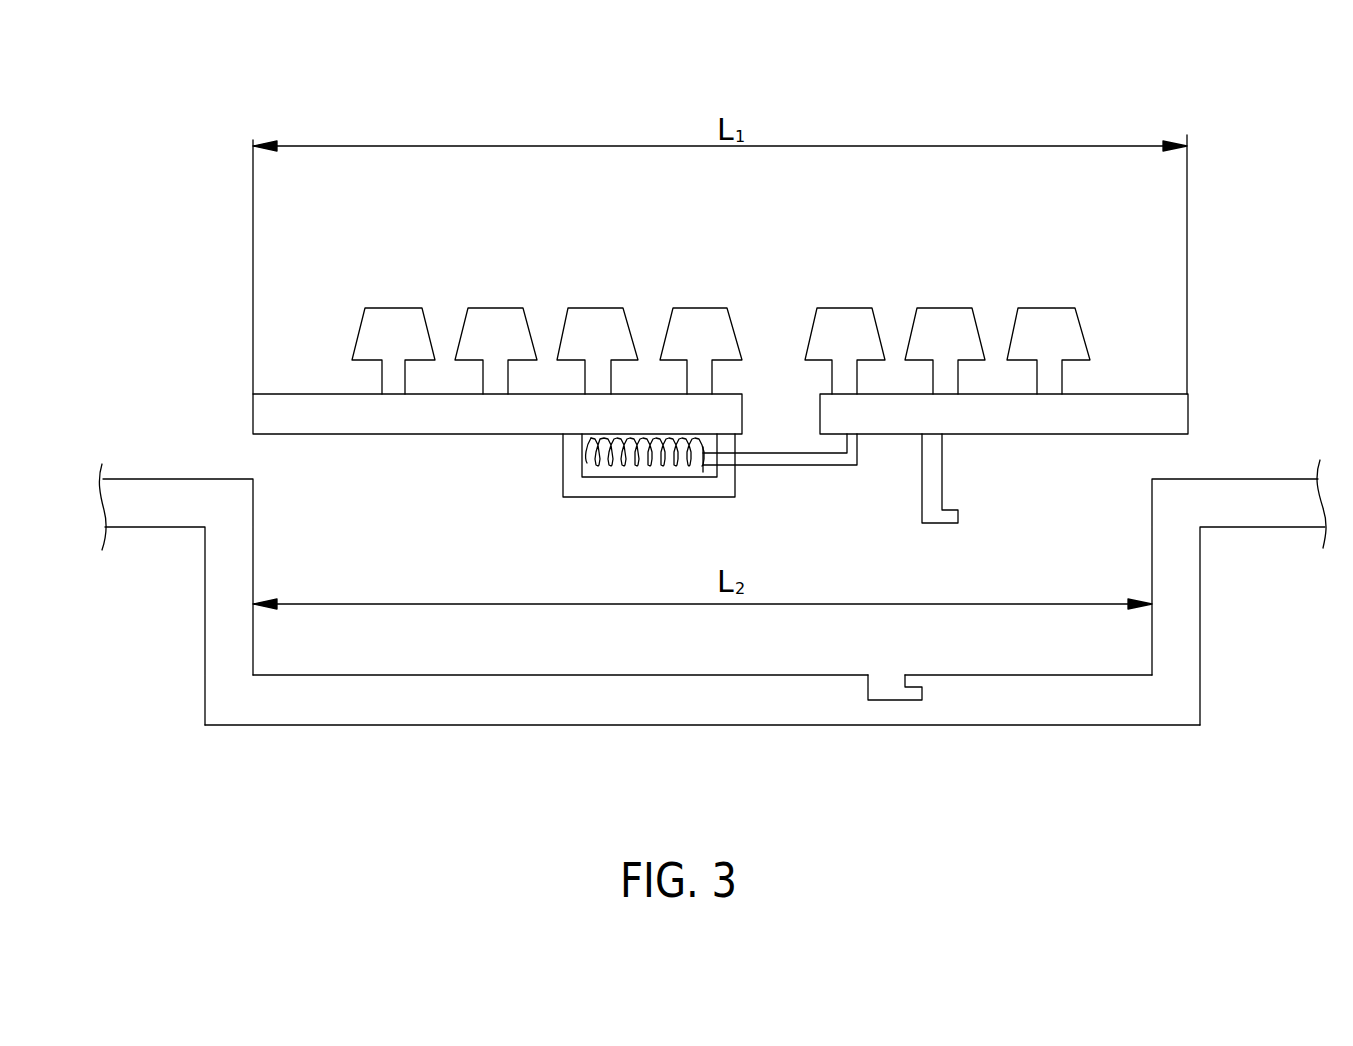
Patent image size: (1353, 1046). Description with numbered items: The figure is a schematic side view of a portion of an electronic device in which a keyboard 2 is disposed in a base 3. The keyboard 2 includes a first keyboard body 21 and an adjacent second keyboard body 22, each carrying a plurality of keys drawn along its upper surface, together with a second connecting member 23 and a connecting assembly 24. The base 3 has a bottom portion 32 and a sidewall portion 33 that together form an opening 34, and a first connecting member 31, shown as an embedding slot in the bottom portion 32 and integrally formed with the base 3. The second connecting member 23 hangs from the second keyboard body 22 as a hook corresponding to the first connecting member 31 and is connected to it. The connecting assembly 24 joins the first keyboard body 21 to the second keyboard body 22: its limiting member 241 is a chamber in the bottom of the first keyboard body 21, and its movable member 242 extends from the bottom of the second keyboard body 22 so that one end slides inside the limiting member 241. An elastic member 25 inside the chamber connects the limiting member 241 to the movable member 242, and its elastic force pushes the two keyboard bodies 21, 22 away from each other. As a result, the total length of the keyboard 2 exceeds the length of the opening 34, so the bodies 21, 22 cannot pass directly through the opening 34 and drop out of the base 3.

The keyboard 2 is at (128, 105).
The first keyboard body 21 is at (457, 292).
The second keyboard body 22 is at (1005, 298).
The second connecting member 23 is at (935, 458).
The connecting assembly 24 is at (661, 18).
The limiting member 241 is at (573, 466).
The movable member 242 is at (788, 455).
The elastic member 25 is at (658, 446).
The base 3 is at (1153, 722).
The first connecting member 31 is at (893, 702).
The bottom portion 32 is at (560, 677).
The sidewall portion 33 is at (1152, 625).
The opening 34 is at (337, 633).